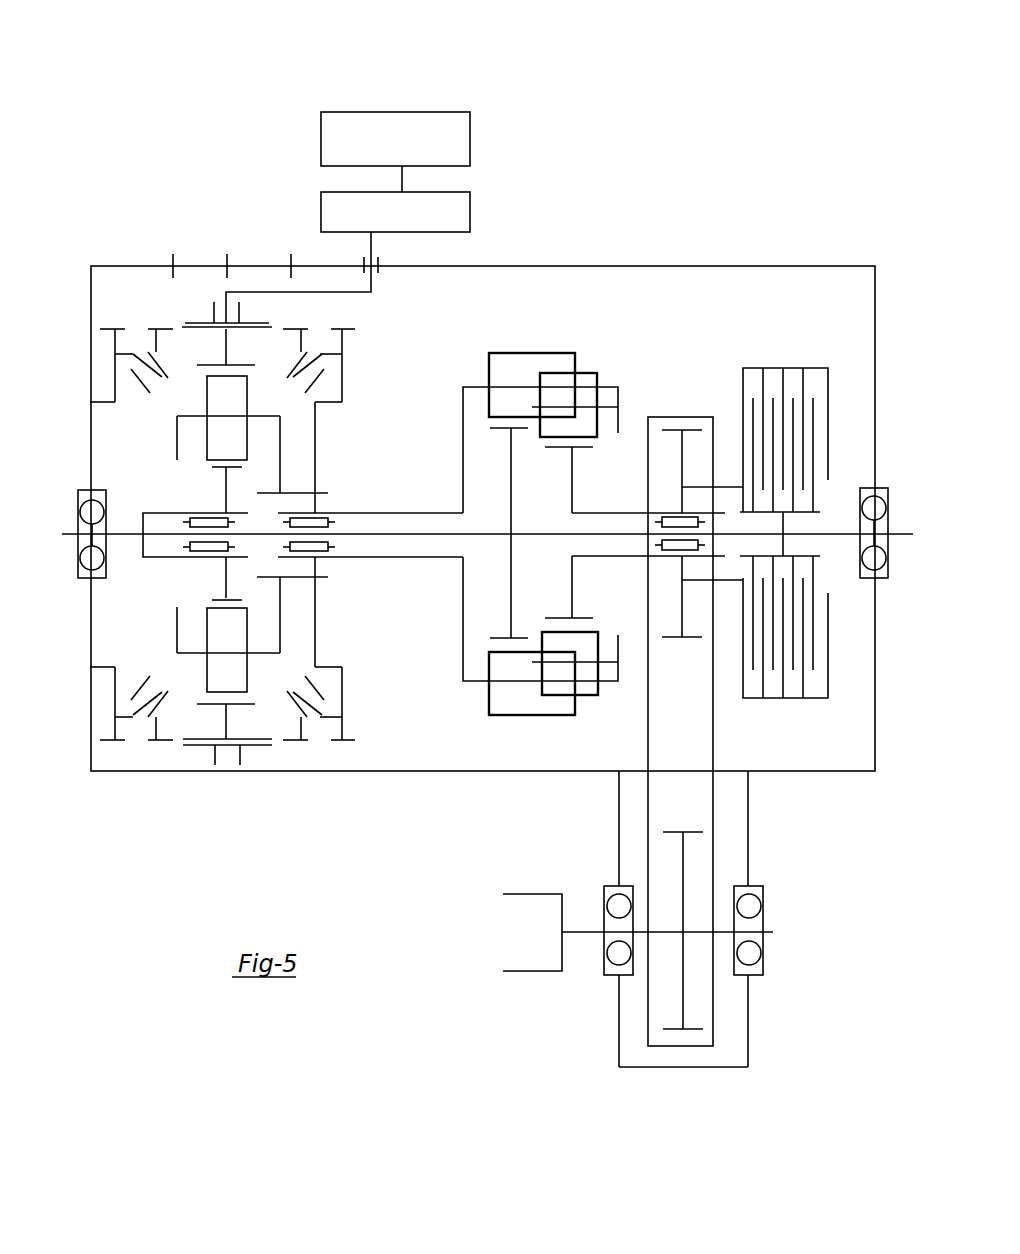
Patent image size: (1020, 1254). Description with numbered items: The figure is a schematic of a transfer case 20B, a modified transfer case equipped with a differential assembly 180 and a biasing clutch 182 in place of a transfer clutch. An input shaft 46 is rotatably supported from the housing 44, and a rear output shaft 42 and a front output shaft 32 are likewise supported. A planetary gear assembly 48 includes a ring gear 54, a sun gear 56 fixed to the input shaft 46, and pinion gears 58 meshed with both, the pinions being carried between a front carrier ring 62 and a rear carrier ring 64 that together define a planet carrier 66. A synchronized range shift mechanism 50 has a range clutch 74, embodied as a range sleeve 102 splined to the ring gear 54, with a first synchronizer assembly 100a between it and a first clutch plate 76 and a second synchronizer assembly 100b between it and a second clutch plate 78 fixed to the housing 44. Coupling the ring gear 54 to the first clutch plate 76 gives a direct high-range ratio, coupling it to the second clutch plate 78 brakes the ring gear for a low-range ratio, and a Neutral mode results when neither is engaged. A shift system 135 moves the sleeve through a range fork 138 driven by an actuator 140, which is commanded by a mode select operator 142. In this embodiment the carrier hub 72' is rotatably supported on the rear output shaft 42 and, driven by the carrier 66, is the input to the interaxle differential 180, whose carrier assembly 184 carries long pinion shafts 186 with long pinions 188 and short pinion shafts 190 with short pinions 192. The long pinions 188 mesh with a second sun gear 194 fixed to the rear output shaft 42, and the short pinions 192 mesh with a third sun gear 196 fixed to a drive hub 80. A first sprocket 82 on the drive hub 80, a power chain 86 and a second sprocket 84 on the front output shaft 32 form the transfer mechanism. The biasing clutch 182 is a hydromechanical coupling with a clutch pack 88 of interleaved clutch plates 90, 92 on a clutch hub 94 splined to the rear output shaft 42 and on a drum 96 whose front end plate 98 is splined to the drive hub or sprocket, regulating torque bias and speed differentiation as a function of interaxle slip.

The transfer case 20B is at (674, 177).
The shift system 135 is at (449, 72).
The mode select operator 142 is at (471, 137).
The actuator 140 is at (462, 209).
The range fork 138 is at (325, 290).
The housing 44 is at (823, 266).
The range sleeve 102 is at (187, 322).
The range clutch 74 is at (257, 318).
The first synchronizer assembly 100a is at (318, 328).
The second synchronizer assembly 100b is at (131, 312).
The synchronized range shift mechanism 50 is at (141, 297).
The second clutch plate 78 is at (115, 345).
The planetary gear assembly 48 is at (171, 388).
The first clutch plate 76 is at (317, 433).
The ring gear 54 is at (242, 337).
The pinion gears 58 is at (227, 397).
The planet carrier 66 is at (229, 534).
The front carrier ring 62 is at (177, 458).
The rear carrier ring 64 is at (278, 438).
The sun gear 56 is at (223, 483).
The carrier hub 72' is at (370, 518).
The input shaft 46 is at (128, 537).
The differential assembly 180 is at (566, 332).
The long pinion shafts 186 is at (551, 495).
The long pinions 188 is at (512, 362).
The short pinions 192 is at (590, 380).
The carrier assembly 184 is at (618, 387).
The second sun gear 194 is at (512, 510).
The short pinion shafts 190 is at (607, 408).
The third sun gear 196 is at (573, 478).
The drive hub 80 is at (600, 560).
The power chain 86 is at (713, 790).
The first sprocket 82 is at (683, 458).
The front end plate 98 is at (743, 388).
The second sprocket 84 is at (683, 870).
The biasing clutch 182 is at (775, 355).
The clutch plates 90 is at (820, 410).
The clutch pack 88 is at (772, 688).
The clutch plates 92 is at (803, 683).
The clutch hub 94 is at (808, 557).
The drum 96 is at (829, 662).
The rear output shaft 42 is at (912, 535).
The front output shaft 32 is at (587, 930).